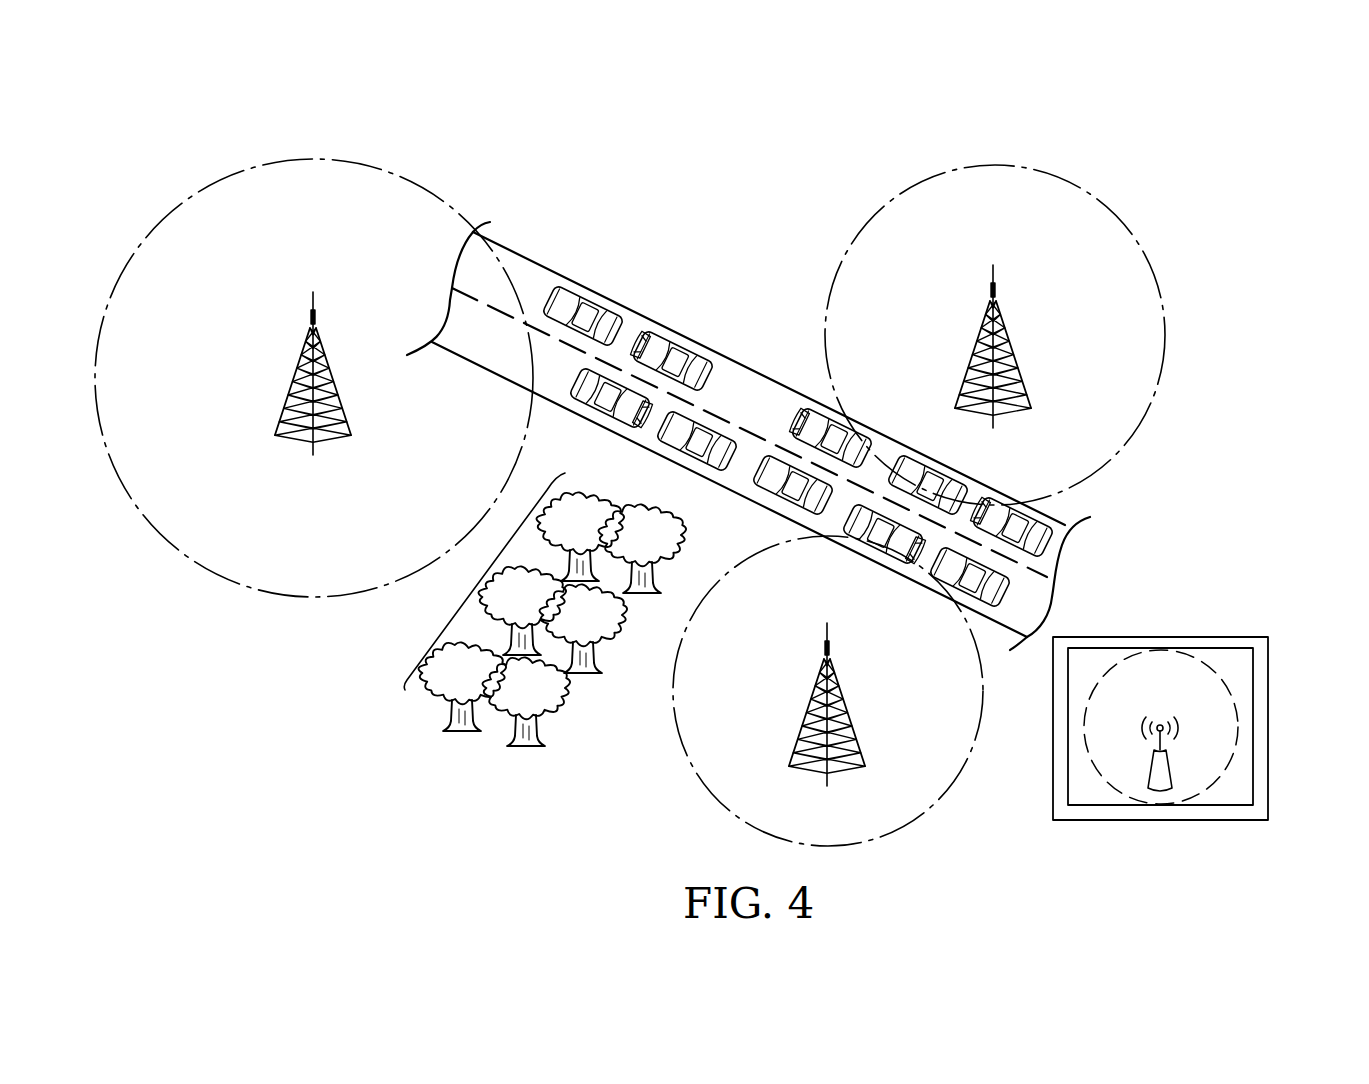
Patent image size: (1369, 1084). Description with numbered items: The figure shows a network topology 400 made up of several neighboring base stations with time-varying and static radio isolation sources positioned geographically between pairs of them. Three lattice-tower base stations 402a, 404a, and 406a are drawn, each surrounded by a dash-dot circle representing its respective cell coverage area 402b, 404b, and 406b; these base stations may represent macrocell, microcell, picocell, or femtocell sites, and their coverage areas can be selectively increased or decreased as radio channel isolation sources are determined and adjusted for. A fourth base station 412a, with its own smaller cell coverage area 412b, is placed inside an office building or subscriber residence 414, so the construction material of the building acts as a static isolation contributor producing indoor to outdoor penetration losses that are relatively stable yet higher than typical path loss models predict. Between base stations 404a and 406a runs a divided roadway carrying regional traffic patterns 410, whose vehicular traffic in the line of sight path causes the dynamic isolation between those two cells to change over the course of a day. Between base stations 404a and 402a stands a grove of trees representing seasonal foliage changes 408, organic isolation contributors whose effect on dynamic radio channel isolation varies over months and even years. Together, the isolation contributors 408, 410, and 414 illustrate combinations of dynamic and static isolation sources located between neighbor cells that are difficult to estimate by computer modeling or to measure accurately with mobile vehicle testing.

The network topology 400 is at (210, 98).
The network base station 402a is at (295, 380).
The cell coverage area 402b is at (171, 214).
The network base station 404a is at (845, 712).
The cell coverage area 404b is at (905, 828).
The network base station 406a is at (1010, 355).
The cell coverage area 406b is at (1105, 210).
The seasonal foliage changes 408 is at (488, 572).
The regional traffic patterns 410 is at (746, 355).
The network base station 412a is at (1173, 770).
The cell coverage area 412b is at (1220, 680).
The isolation contributor 414 is at (1270, 728).